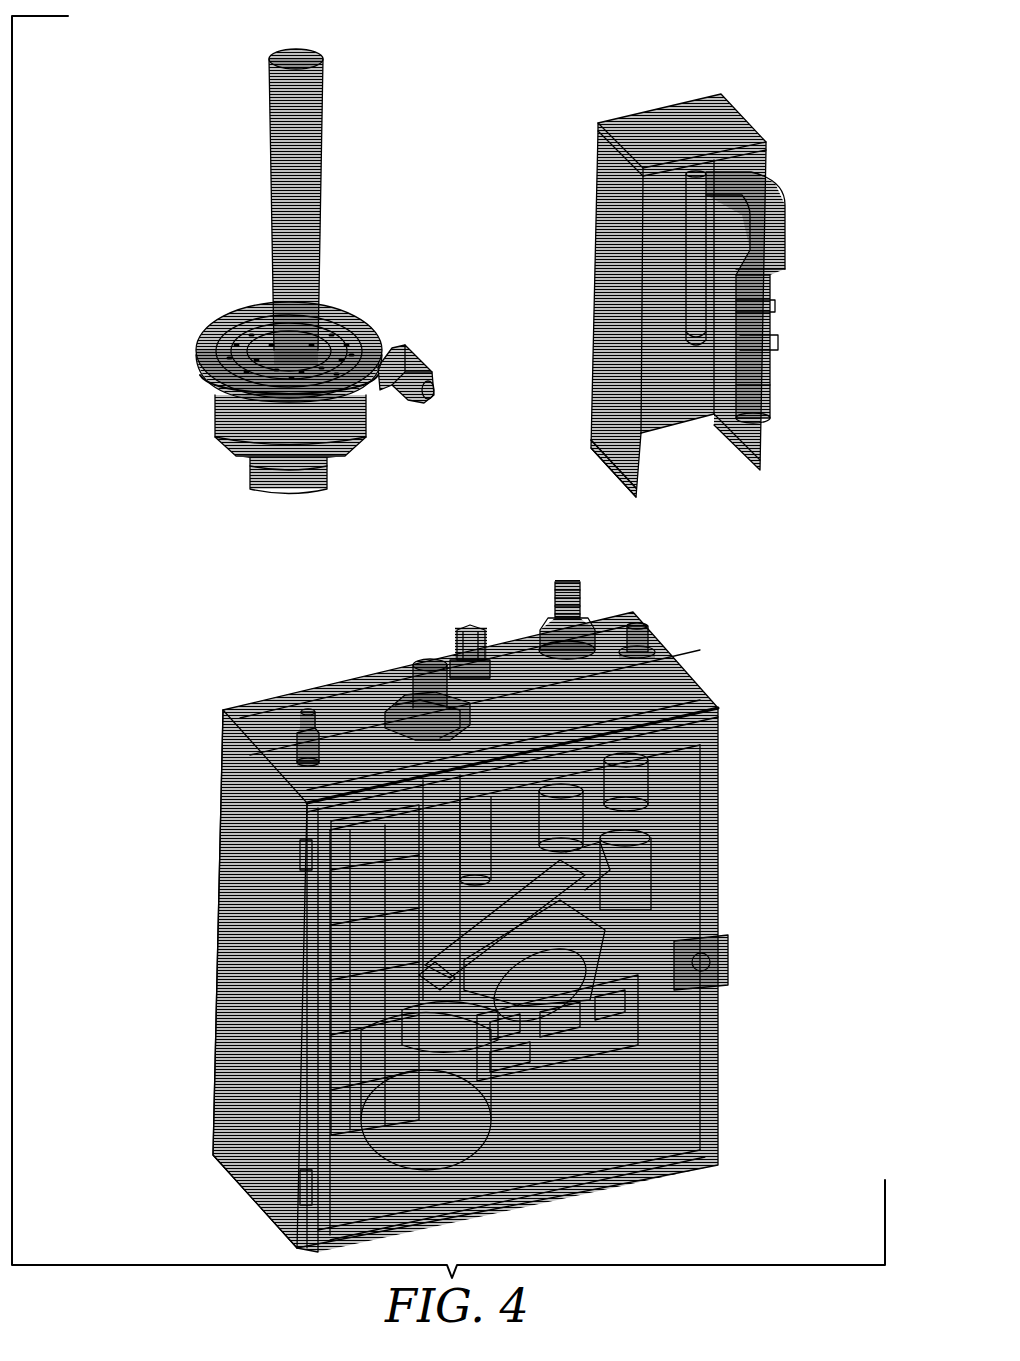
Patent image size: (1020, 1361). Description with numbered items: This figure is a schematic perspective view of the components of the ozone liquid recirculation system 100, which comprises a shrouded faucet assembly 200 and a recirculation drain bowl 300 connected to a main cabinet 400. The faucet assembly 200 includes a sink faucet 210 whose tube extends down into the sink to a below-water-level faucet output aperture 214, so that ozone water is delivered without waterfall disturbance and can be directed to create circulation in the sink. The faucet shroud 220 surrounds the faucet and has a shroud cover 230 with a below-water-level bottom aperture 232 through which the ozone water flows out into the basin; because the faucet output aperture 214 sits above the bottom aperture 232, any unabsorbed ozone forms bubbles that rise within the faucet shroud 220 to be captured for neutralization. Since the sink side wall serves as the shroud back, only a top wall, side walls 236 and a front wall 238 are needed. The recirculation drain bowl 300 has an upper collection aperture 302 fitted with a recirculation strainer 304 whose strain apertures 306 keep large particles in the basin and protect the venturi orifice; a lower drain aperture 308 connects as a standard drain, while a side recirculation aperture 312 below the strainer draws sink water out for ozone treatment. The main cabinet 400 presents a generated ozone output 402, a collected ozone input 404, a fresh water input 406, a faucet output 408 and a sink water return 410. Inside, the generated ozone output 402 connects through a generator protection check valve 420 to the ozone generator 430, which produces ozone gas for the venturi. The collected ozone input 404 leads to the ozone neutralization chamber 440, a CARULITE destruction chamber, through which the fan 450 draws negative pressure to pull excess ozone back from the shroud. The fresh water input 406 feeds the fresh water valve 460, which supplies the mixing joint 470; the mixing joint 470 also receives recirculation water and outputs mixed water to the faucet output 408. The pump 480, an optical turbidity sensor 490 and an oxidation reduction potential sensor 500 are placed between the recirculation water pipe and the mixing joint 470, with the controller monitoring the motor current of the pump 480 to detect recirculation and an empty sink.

The ozone liquid recirculation system 100 is at (140, 133).
The recirculation drain bowl 300 is at (219, 412).
The upper collection aperture 302 is at (207, 348).
The recirculation strainer 304 is at (223, 336).
The strain apertures 306 is at (262, 325).
The lower drain aperture 308 is at (260, 482).
The recirculation aperture 312 is at (406, 402).
The faucet assembly 200 is at (591, 172).
The sink faucet 210 is at (688, 224).
The faucet output aperture 214 is at (688, 347).
The faucet shroud 220 is at (618, 110).
The shroud cover 230 is at (594, 289).
The bottom aperture 232 is at (693, 465).
The side walls 236 is at (615, 480).
The front wall 238 is at (611, 442).
The main cabinet 400 is at (672, 655).
The generated ozone output 402 is at (302, 722).
The collected ozone input 404 is at (417, 663).
The fresh water input 406 is at (462, 630).
The faucet output 408 is at (565, 583).
The sink water return 410 is at (632, 627).
The generator protection check valve 420 is at (298, 747).
The ozone generator 430 is at (333, 935).
The ozone neutralization chamber 440 is at (390, 743).
The fan 450 is at (472, 1160).
The fresh water valve 460 is at (530, 680).
The mixing joint 470 is at (577, 817).
The pump 480 is at (688, 955).
The optical turbidity sensor 490 is at (657, 700).
The oxidation reduction potential sensor 500 is at (640, 905).